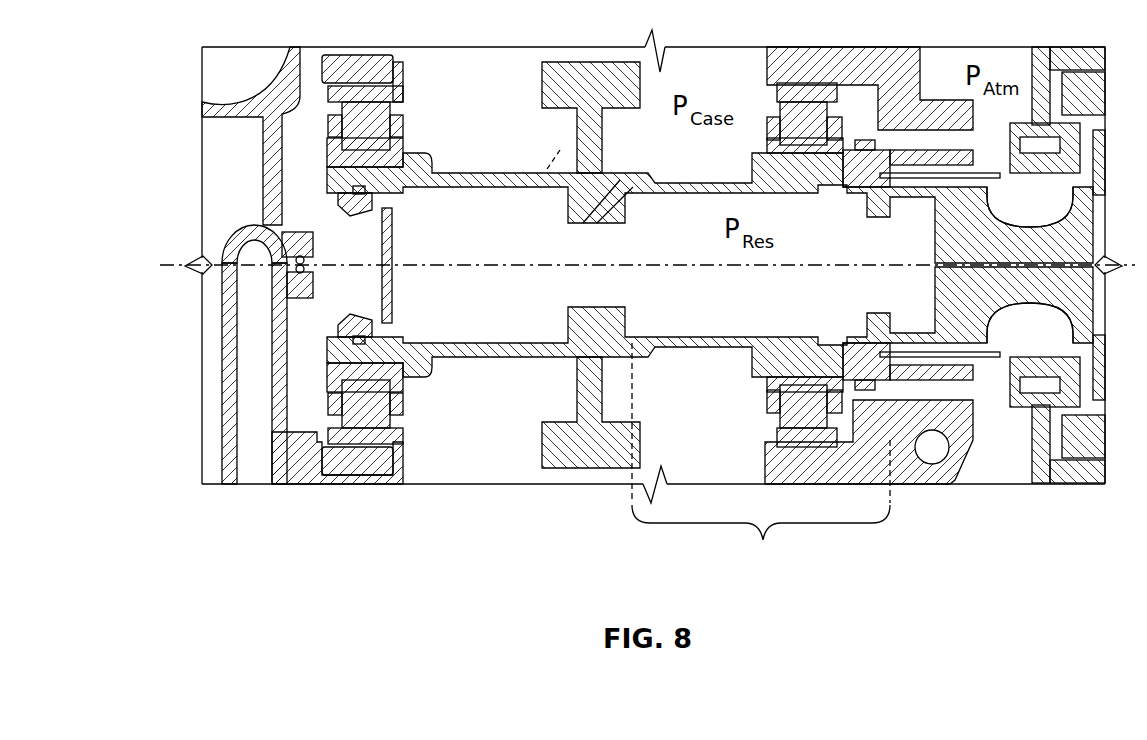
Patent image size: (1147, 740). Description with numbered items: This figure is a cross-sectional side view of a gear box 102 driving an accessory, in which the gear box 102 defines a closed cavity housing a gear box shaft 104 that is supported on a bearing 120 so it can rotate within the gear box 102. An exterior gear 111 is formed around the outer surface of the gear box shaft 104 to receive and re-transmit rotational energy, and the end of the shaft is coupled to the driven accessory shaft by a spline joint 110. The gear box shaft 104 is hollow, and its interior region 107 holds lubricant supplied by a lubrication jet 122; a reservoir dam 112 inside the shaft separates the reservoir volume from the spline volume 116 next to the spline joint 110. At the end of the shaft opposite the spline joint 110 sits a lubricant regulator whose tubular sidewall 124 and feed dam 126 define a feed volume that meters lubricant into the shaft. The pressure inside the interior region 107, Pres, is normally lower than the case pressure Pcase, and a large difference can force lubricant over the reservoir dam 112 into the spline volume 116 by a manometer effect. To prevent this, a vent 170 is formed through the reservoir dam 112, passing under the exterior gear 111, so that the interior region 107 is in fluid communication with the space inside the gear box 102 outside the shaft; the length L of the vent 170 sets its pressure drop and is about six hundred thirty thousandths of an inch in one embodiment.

The gear box 102 is at (222, 388).
The gear box shaft 104 is at (510, 352).
The interior region 107 is at (808, 310).
The spline joint 110 is at (872, 213).
The exterior gear 111 is at (548, 73).
The reservoir dam 112 is at (622, 316).
The spline volume 116 is at (763, 540).
The bearing 120 is at (405, 396).
The lubrication jet 122 is at (258, 232).
The tubular sidewall 124 is at (370, 323).
The feed dam 126 is at (347, 318).
The vent 170 is at (627, 181).
The vent length L is at (563, 127).